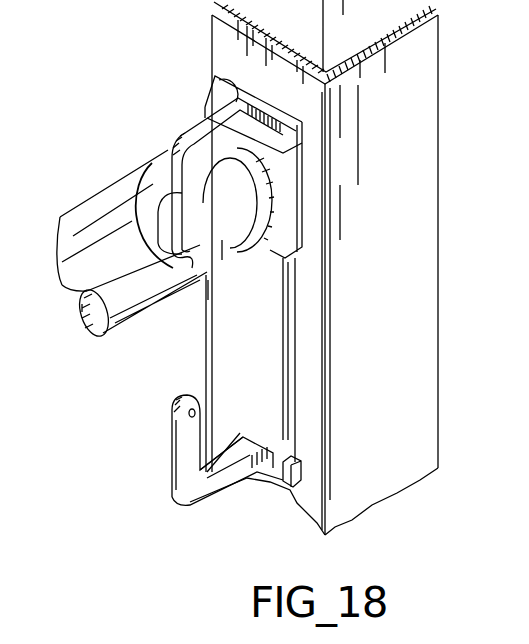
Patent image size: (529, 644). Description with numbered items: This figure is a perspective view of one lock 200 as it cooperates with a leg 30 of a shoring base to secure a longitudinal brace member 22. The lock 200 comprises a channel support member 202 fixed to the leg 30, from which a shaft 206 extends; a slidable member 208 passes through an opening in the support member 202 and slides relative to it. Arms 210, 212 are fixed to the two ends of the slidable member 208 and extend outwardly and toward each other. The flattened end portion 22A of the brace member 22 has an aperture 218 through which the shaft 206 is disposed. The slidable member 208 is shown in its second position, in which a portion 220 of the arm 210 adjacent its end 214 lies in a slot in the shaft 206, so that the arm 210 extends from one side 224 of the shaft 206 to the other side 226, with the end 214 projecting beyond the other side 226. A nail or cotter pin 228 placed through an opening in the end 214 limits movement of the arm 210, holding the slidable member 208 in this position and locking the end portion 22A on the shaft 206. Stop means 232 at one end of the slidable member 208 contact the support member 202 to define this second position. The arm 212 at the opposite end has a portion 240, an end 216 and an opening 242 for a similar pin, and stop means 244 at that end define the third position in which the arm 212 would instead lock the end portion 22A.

The leg 30 is at (395, 334).
The longitudinal brace member 22 is at (128, 322).
The flattened end portion 22A is at (199, 277).
The lock 200 is at (175, 510).
The channel support member 202 is at (293, 237).
The shaft 206 is at (222, 240).
The slidable member 208 is at (275, 383).
The arm 210 is at (182, 138).
The arm 212 is at (196, 510).
The end 214 is at (82, 308).
The end 216 is at (176, 400).
The aperture 218 is at (220, 222).
The portion 220 is at (172, 238).
The one side 224 is at (173, 172).
The other side 226 is at (82, 288).
The cotter pin 228 is at (208, 280).
The stop means 232 is at (232, 84).
The portion 240 is at (187, 485).
The opening 242 is at (188, 416).
The stop means 244 is at (290, 482).